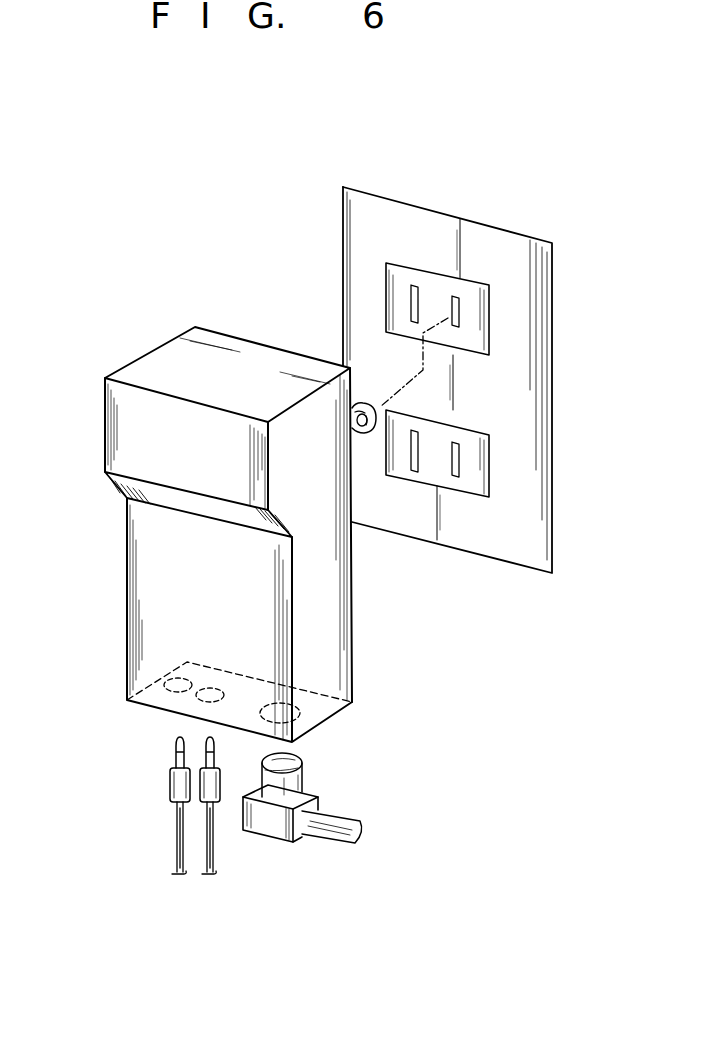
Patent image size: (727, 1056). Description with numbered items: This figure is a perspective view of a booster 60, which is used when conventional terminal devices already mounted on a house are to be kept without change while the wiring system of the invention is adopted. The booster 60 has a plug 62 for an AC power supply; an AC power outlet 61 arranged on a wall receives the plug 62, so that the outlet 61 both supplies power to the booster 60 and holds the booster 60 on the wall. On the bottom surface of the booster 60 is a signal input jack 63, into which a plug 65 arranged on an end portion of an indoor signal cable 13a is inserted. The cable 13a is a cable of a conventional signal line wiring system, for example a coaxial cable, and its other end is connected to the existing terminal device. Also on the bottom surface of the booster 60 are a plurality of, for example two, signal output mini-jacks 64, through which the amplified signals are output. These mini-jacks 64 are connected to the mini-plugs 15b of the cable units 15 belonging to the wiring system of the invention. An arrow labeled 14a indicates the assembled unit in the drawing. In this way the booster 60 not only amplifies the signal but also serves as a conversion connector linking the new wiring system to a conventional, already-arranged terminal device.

The booster 60 is at (124, 541).
The AC power outlet 61 is at (553, 320).
The plug 62 is at (365, 440).
The signal input jack 63 is at (303, 710).
The signal output mini-jacks 64 is at (196, 698).
The plug 65 is at (313, 795).
The indoor signal cable 13a is at (337, 838).
The adapter unit 14a is at (376, 631).
The cable units 15 is at (165, 845).
The mini-plugs 15b is at (173, 789).